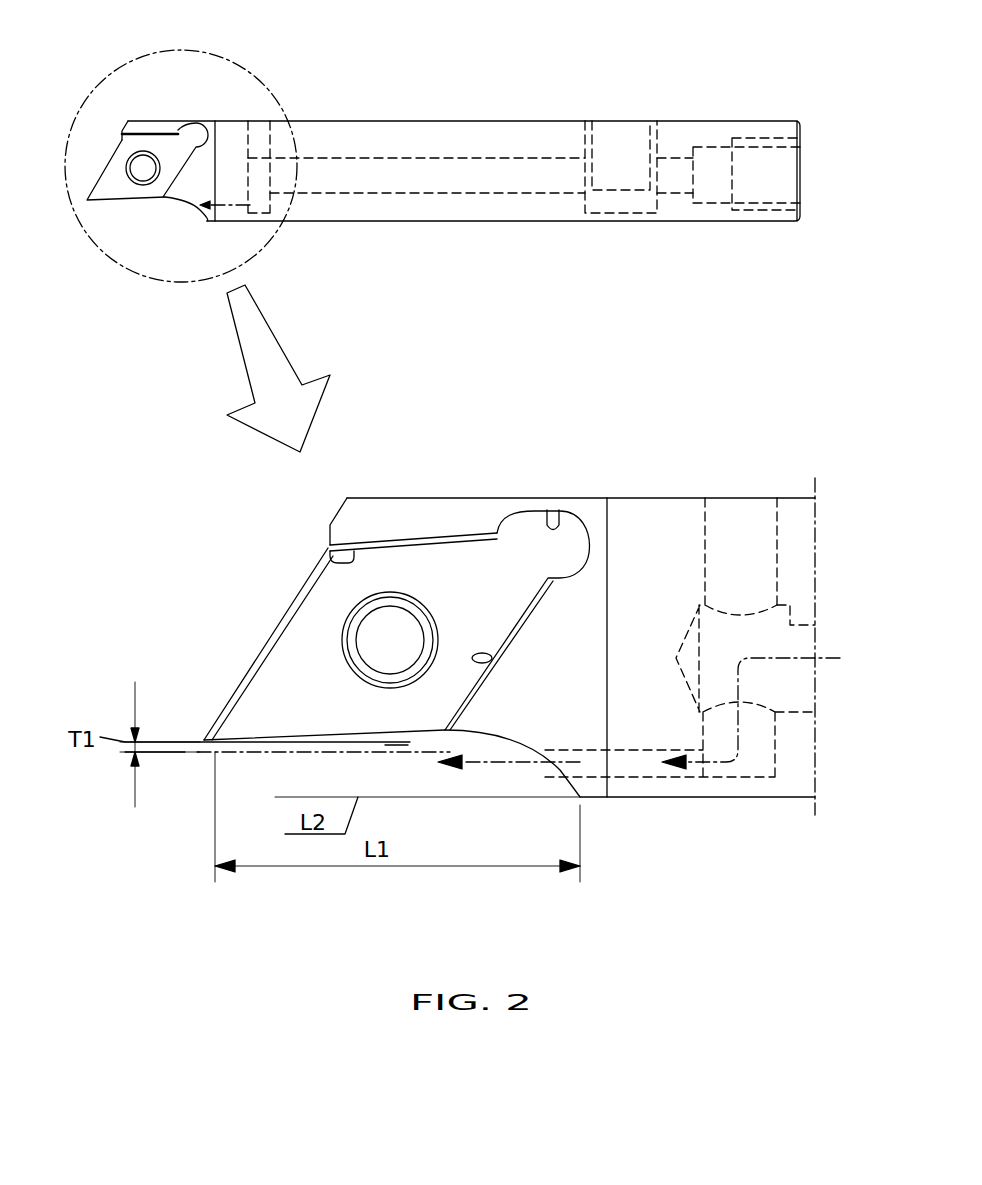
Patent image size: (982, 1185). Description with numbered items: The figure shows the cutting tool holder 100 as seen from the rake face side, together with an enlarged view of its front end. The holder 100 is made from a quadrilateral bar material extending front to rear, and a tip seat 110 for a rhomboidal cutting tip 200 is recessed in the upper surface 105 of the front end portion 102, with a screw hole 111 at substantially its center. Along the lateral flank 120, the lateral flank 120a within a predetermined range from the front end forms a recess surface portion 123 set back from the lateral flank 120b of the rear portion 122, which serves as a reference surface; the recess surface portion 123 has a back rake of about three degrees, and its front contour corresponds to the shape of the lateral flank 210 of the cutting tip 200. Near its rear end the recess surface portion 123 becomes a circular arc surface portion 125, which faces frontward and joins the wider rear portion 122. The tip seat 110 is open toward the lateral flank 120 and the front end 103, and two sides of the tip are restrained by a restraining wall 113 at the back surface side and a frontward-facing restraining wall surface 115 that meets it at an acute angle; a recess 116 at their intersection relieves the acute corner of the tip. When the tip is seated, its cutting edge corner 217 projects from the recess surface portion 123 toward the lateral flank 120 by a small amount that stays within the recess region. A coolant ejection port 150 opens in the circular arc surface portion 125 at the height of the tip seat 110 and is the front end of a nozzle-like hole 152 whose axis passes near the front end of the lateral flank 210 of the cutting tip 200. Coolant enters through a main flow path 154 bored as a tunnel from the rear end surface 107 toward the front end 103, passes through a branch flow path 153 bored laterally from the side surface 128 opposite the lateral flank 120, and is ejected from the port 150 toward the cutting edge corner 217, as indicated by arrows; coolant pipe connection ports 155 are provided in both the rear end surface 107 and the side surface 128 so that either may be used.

The cutting tool holder 100 is at (455, 103).
The front end portion 102 is at (188, 98).
The front end 103 is at (255, 676).
The upper surface 105 is at (330, 122).
The rear end surface 107 is at (800, 183).
The tip seat 110 is at (140, 170).
The screw hole 111 is at (408, 633).
The restraining wall 113 is at (330, 555).
The frontward-facing restraining wall surface 115 is at (492, 658).
The recess 116 is at (551, 510).
The lateral flank 120 is at (388, 224).
The lateral flank in range L1 120a is at (96, 200).
The lateral flank of rear portion 120b is at (468, 222).
The rear portion 122 is at (565, 222).
The recess surface portion 123 is at (363, 748).
The circular arc surface portion 125 is at (192, 210).
The side surface 128 is at (745, 121).
The coolant ejection port 150 is at (195, 205).
The nozzle-like hole 152 is at (650, 748).
The branch flow path 153 is at (267, 121).
The main flow path 154 is at (532, 172).
The coolant pipe connection port 155 is at (636, 121).
The cutting tip 200 is at (245, 665).
The lateral flank of cutting tip 210 is at (395, 745).
The cutting edge corner 217 is at (195, 755).